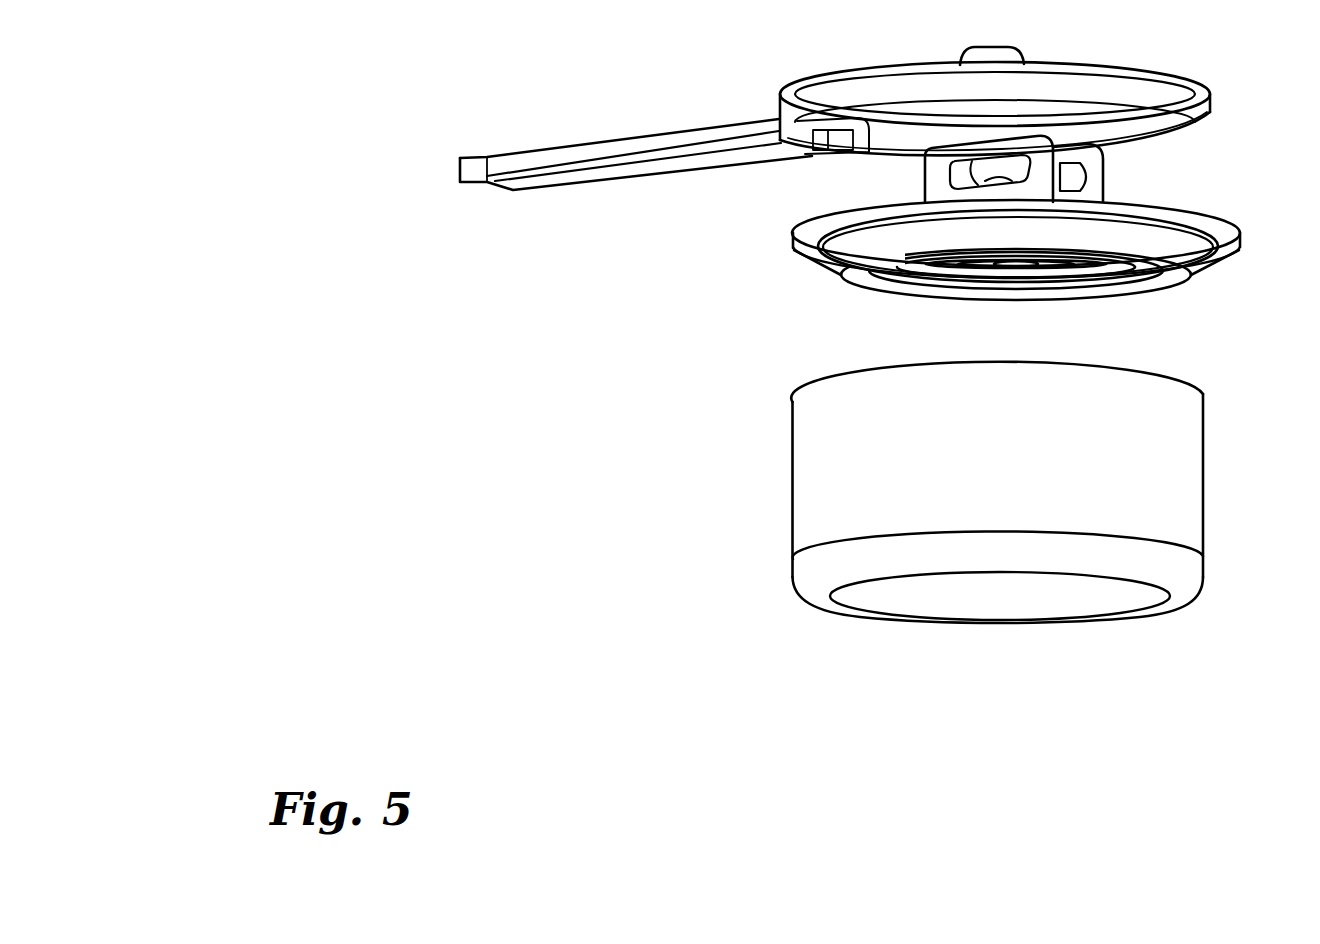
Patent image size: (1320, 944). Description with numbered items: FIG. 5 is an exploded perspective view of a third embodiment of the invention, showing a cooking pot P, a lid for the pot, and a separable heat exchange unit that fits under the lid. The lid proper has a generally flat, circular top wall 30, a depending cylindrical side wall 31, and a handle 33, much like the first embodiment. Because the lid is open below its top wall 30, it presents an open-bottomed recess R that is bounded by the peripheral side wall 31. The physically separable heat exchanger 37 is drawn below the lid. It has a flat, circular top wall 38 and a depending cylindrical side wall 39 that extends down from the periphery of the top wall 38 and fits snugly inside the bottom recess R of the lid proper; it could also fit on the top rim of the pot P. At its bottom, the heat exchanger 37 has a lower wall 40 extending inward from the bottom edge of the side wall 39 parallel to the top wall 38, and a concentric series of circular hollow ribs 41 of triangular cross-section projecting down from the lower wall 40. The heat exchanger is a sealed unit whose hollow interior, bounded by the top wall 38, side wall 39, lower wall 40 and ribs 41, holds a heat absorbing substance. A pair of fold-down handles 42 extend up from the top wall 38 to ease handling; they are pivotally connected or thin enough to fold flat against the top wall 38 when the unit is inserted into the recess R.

The top wall 30 is at (1046, 82).
The side wall 31 is at (1210, 110).
The handle 33 is at (511, 168).
The heat exchanger 37 is at (1013, 195).
The top wall 38 is at (973, 235).
The side wall 39 is at (790, 247).
The lower wall 40 is at (810, 267).
The circular hollow ribs 41 is at (845, 278).
The fold-down handles 42 is at (937, 191).
The recess R is at (1033, 112).
The container P is at (1198, 520).